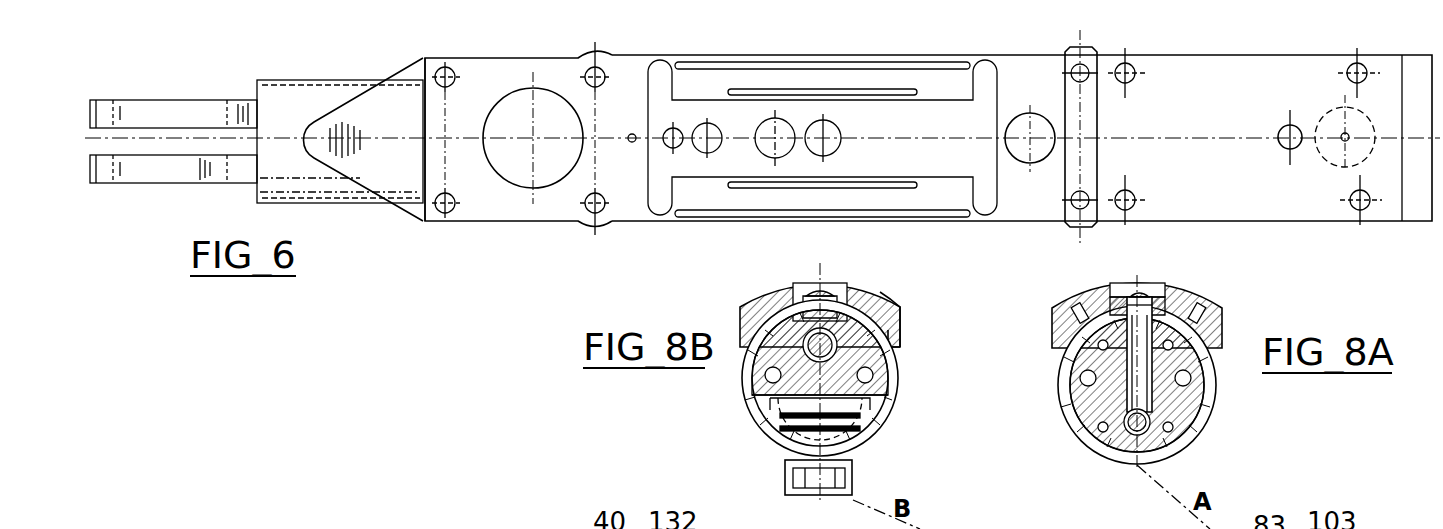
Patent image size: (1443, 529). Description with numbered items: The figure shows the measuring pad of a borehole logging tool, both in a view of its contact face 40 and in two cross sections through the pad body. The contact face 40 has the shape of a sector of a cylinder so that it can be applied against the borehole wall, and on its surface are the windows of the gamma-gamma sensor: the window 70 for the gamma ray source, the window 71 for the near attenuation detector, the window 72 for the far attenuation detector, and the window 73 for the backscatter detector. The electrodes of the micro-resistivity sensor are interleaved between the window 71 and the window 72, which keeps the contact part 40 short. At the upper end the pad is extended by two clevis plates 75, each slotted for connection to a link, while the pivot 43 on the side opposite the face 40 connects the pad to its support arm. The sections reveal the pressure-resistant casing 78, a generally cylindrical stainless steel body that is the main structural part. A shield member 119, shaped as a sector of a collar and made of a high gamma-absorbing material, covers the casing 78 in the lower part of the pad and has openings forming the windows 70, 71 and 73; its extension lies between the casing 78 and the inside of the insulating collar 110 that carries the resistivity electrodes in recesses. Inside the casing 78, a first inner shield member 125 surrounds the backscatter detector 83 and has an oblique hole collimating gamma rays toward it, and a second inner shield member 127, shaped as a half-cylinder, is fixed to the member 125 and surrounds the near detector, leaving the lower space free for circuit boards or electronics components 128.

In FIG. 6, the clevis plates 75 is at (106, 102).
In FIG. 6, the window of the far detector 72 is at (516, 108).
In FIG. 6, the window of the near detector 71 is at (1022, 150).
In FIG. 8B, the window of the near detector 71 is at (842, 286).
In FIG. 6, the window of the backscatter detector 73 is at (1285, 127).
In FIG. 8A, the window of the backscatter detector 73 is at (1150, 288).
In FIG. 6, the window of the source 70 is at (1338, 155).
In FIG. 8B, the contact face 40 is at (761, 305).
In FIG. 8B, the collar of insulating material 110 is at (896, 306).
In FIG. 8B, the shield member 119 is at (898, 341).
In FIG. 8A, the shield member 119 is at (1054, 332).
In FIG. 8B, the pressure-resistant casing 78 is at (746, 386).
In FIG. 8A, the pressure-resistant casing 78 is at (1062, 406).
In FIG. 8B, the second inner shield member 127 is at (882, 396).
In FIG. 8B, the circuit boards or electronics components 128 is at (800, 435).
In FIG. 8B, the pivot 43 is at (853, 476).
In FIG. 8A, the first inner shield member 125 is at (1200, 403).
In FIG. 8A, the backscatter detector 83 is at (1116, 446).